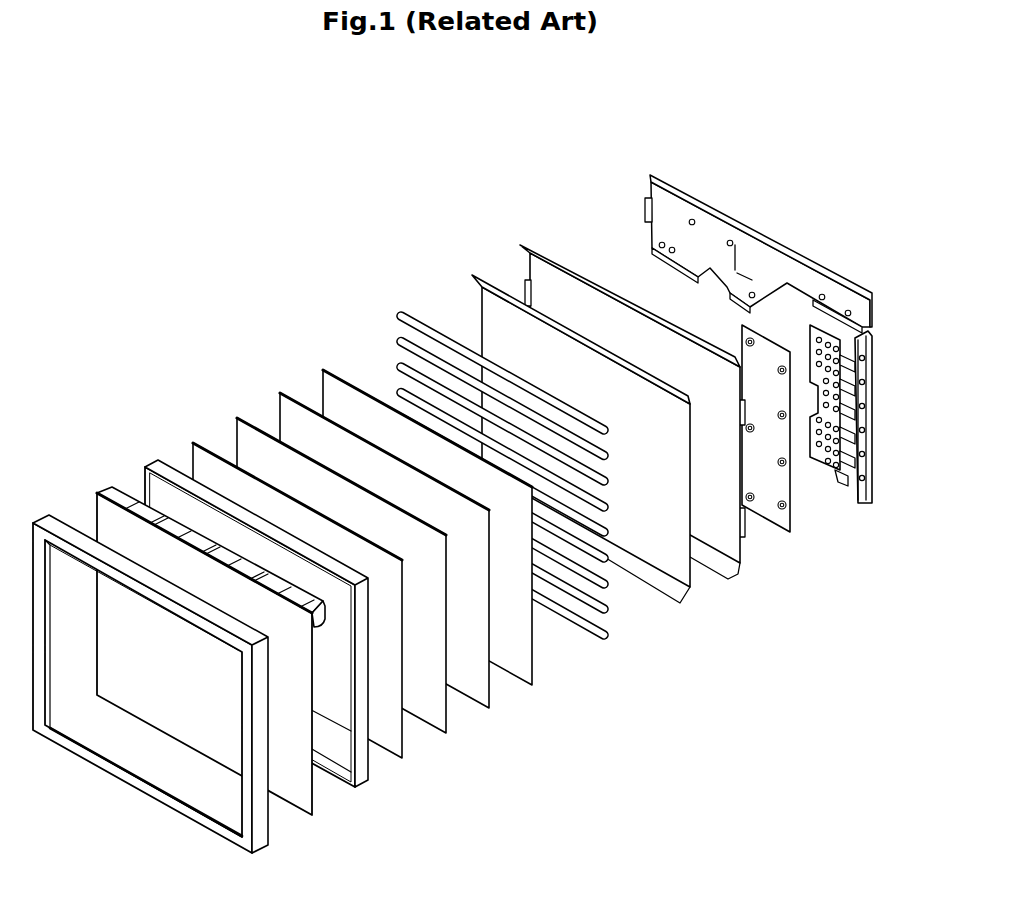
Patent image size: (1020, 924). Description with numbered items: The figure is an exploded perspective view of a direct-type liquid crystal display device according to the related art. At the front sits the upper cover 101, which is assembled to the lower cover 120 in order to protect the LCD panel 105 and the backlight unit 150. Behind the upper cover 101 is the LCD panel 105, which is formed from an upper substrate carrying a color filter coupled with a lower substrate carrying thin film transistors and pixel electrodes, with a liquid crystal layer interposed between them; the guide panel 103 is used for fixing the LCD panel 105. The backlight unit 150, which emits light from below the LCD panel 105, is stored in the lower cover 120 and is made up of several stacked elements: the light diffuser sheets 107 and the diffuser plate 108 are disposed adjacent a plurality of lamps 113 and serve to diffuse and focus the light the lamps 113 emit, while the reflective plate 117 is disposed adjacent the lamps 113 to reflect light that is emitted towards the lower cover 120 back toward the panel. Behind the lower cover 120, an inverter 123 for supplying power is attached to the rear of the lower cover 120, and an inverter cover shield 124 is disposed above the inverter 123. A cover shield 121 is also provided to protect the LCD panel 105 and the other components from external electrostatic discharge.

The upper cover 101 is at (53, 519).
The guide panel 103 is at (153, 461).
The LCD panel 105 is at (113, 487).
The light diffuser sheets 107 is at (279, 392).
The diffuser plate 108 is at (323, 369).
The lamps 113 is at (420, 320).
The reflective plate 117 is at (472, 275).
The lower cover 120 is at (538, 250).
The cover shield 121 is at (650, 175).
The inverter 123 is at (783, 517).
The inverter cover shield 124 is at (873, 504).
The backlight unit 150 is at (456, 178).